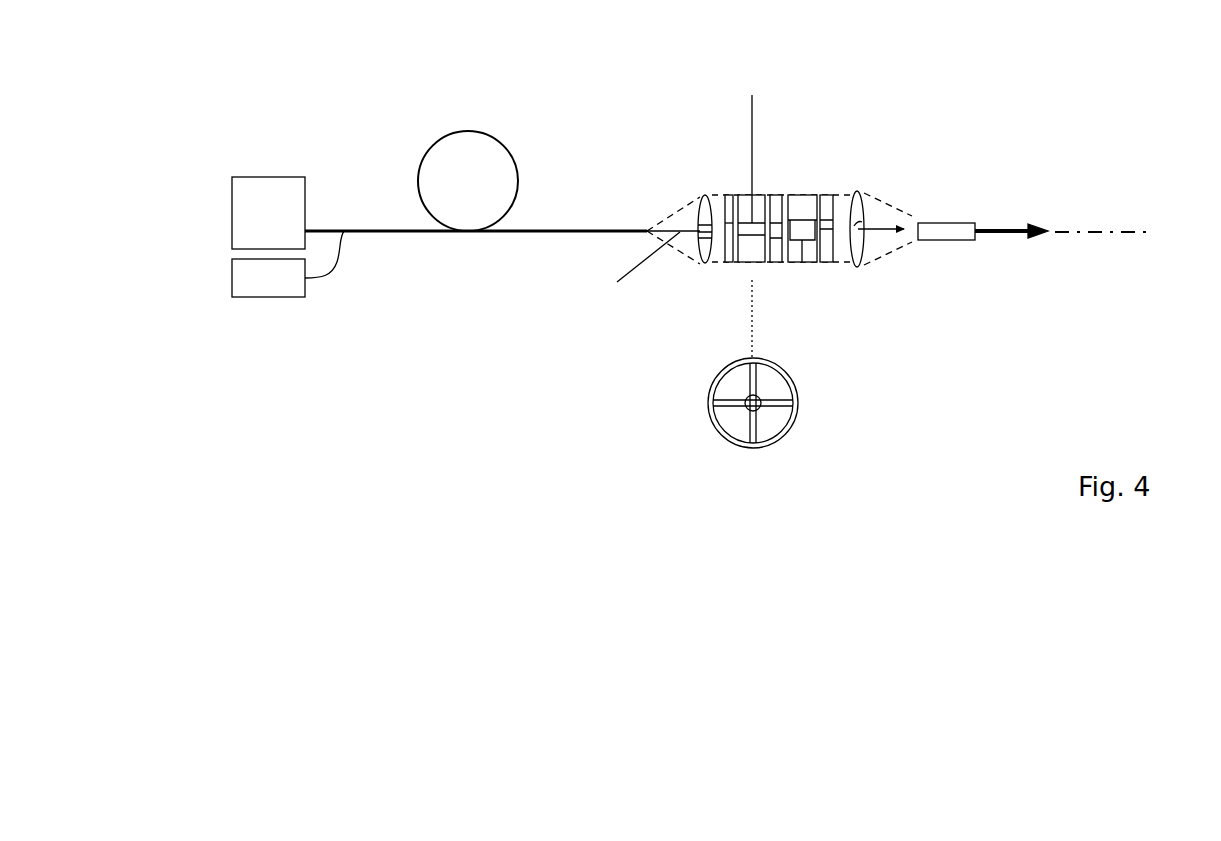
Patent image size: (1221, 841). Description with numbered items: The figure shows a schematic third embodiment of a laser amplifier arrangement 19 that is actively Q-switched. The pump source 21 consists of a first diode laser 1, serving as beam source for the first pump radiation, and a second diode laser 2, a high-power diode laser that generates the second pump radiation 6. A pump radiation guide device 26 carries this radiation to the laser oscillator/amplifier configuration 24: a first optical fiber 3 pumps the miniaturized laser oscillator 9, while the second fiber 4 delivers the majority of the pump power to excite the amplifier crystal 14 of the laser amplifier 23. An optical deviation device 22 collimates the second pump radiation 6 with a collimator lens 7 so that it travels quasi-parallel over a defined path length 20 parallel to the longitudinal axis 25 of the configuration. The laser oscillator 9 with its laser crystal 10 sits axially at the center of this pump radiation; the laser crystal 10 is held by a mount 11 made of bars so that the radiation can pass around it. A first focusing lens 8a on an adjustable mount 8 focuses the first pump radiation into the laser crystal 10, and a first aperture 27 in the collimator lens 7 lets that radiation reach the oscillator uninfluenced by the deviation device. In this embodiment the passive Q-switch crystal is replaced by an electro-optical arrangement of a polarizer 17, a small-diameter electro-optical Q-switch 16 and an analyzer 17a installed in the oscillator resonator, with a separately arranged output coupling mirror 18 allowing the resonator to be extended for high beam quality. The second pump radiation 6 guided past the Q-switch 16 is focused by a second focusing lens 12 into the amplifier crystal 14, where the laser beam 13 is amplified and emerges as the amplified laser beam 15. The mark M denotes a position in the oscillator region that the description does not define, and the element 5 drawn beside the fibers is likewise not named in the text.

The first diode laser 1 is at (232, 278).
The second diode laser 2 is at (232, 210).
The first optical fiber 3 is at (338, 262).
The second fiber 4 is at (331, 222).
The feed roller 5 is at (471, 130).
The second pump radiation 6 is at (680, 211).
The collimator lens 7 is at (703, 193).
The mount 8 is at (729, 263).
The first focusing lens 8a is at (728, 342).
The laser oscillator 9 is at (777, 262).
The laser crystal 10 is at (832, 387).
The mount 11 is at (798, 418).
The second focusing lens 12 is at (865, 262).
The laser beam 13 is at (888, 227).
The amplifier crystal 14 is at (957, 243).
The amplified laser beam 15 is at (1011, 215).
The electro-optical Q-switch 16 is at (802, 263).
The polarizer 17 is at (782, 195).
The analyzer 17a is at (832, 196).
The output coupling mirror 18 is at (862, 223).
The laser amplifier arrangement 19 is at (492, 495).
The path length 20 is at (862, 74).
The pump source 21 is at (312, 320).
The optical deviation device 22 is at (697, 290).
The laser amplifier 23 is at (968, 200).
The laser oscillator/amplifier configuration 24 is at (682, 395).
The longitudinal axis 25 is at (1100, 231).
The pump radiation guide device 26 is at (537, 238).
The first aperture 27 is at (697, 257).
The measuring point M is at (761, 195).